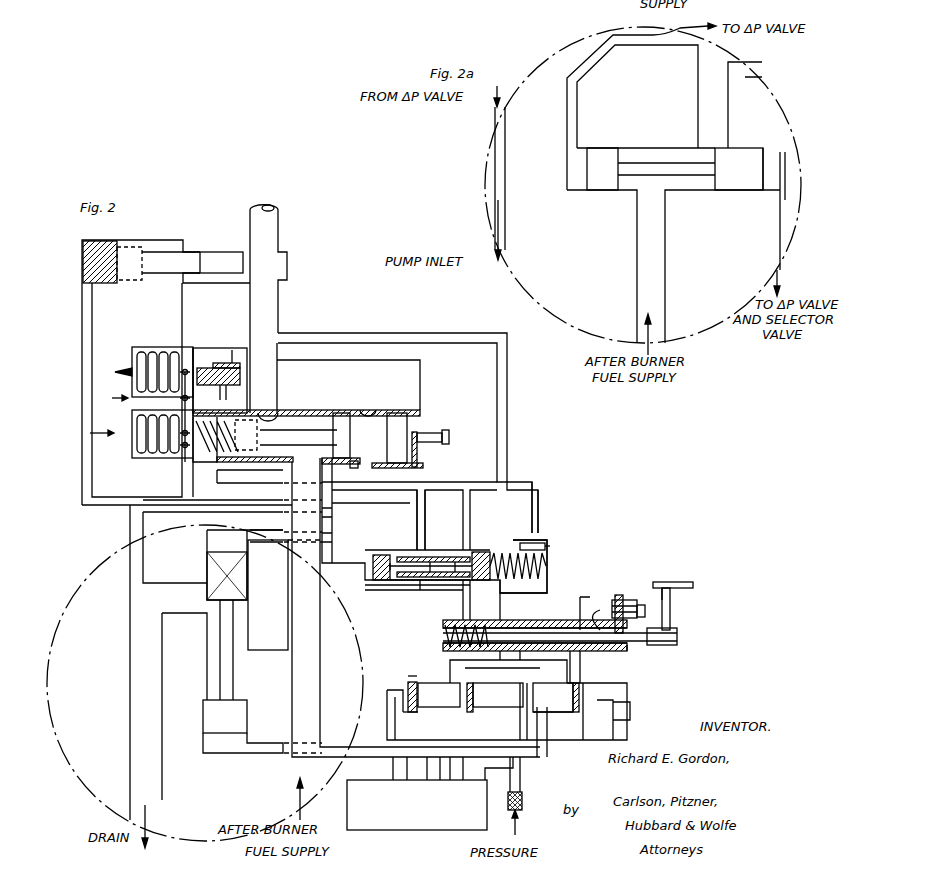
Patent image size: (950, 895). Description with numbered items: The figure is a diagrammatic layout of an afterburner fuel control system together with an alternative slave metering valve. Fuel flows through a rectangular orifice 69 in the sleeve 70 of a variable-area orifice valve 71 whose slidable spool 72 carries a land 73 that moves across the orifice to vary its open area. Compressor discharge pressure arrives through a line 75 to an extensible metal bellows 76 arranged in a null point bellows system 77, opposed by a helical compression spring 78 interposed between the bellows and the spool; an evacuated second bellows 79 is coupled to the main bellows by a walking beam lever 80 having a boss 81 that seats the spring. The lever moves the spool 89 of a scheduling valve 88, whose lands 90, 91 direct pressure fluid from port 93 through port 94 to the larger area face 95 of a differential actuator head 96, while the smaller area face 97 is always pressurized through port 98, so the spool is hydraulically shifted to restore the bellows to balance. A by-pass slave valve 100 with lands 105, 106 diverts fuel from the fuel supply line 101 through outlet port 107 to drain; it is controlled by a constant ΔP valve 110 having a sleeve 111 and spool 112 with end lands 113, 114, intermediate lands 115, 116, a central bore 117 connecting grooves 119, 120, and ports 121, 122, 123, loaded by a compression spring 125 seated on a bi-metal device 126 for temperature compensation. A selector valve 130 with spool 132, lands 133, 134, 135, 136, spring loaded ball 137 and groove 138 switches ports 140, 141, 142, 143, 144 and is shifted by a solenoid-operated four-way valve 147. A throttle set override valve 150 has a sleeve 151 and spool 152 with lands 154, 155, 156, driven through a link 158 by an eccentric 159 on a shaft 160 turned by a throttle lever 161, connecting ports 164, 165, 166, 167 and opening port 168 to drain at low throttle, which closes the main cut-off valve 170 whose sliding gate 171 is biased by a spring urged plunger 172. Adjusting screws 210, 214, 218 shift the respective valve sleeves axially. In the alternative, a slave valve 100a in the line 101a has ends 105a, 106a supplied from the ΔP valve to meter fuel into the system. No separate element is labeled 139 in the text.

In FIG. 2, the orifice 69 is at (287, 422).
In FIG. 2, the sleeve 70 is at (393, 410).
In FIG. 2, the variable-area orifice valve 71 is at (305, 430).
In FIG. 2, the spool 72 is at (318, 440).
In FIG. 2, the land 73 is at (252, 417).
In FIG. 2, the line 75 is at (115, 440).
In FIG. 2, the bellows 76 is at (155, 460).
In FIG. 2, the null point bellows system 77 is at (111, 391).
In FIG. 2, the helical compression spring 78 is at (238, 451).
In FIG. 2, the second bellows 79 is at (157, 350).
In FIG. 2, the walking beam lever 80 is at (184, 455).
In FIG. 2, the boss 81 is at (187, 463).
In FIG. 2, the scheduling valve 88 is at (250, 372).
In FIG. 2, the spool 89 is at (222, 363).
In FIG. 2, the land 90 is at (209, 395).
In FIG. 2, the land 91 is at (233, 363).
In FIG. 2, the port 93 is at (235, 395).
In FIG. 2, the port 94 is at (205, 365).
In FIG. 2, the larger area face 95 is at (425, 428).
In FIG. 2, the differential actuator head 96 is at (405, 443).
In FIG. 2, the smaller area face 97 is at (378, 422).
In FIG. 2, the port 98 is at (352, 470).
In FIG. 2, the by-pass slave valve 100 is at (225, 667).
In FIG. 2, the fuel supply line 101 is at (298, 629).
In FIG. 2, the land 105 is at (237, 577).
In FIG. 2, the land 106 is at (235, 720).
In FIG. 2, the outlet port 107 is at (184, 595).
In FIG. 2, the constant ΔP valve 110 is at (558, 563).
In FIG. 2, the sleeve 111 is at (362, 550).
In FIG. 2, the spool 112 is at (407, 555).
In FIG. 2, the end land 113 is at (372, 580).
In FIG. 2, the end land 114 is at (478, 552).
In FIG. 2, the intermediate land 115 is at (400, 585).
In FIG. 2, the intermediate land 116 is at (432, 555).
In FIG. 2, the central bore 117 is at (423, 578).
In FIG. 2, the groove 119 is at (388, 585).
In FIG. 2, the groove 120 is at (455, 555).
In FIG. 2, the port 121 is at (402, 553).
In FIG. 2, the port 122 is at (442, 590).
In FIG. 2, the port 123 is at (418, 512).
In FIG. 2, the compression spring 125 is at (517, 548).
In FIG. 2, the bi-metal device 126 is at (547, 566).
In FIG. 2, the selector valve 130 is at (617, 688).
In FIG. 2, the spool 132 is at (553, 721).
In FIG. 2, the land 133 is at (418, 705).
In FIG. 2, the land 134 is at (465, 705).
In FIG. 2, the land 135 is at (520, 698).
In FIG. 2, the land 136 is at (598, 702).
In FIG. 2, the spring loaded ball 137 is at (588, 706).
In FIG. 2, the groove 138 is at (605, 718).
In FIG. 2, the passage 139 is at (415, 690).
In FIG. 2, the port 140 is at (515, 714).
In FIG. 2, the port 141 is at (487, 680).
In FIG. 2, the port 142 is at (540, 720).
In FIG. 2, the port 143 is at (553, 697).
In FIG. 2, the port 144 is at (460, 690).
In FIG. 2, the solenoid-operated four-way valve 147 is at (432, 811).
In FIG. 2, the throttle set override valve 150 is at (628, 590).
In FIG. 2, the sleeve 151 is at (635, 628).
In FIG. 2, the spool 152 is at (535, 616).
In FIG. 2, the land 154 is at (535, 628).
In FIG. 2, the land 155 is at (535, 624).
In FIG. 2, the land 156 is at (608, 630).
In FIG. 2, the link 158 is at (679, 640).
In FIG. 2, the eccentric 159 is at (677, 633).
In FIG. 2, the shaft 160 is at (672, 600).
In FIG. 2, the throttle lever 161 is at (690, 582).
In FIG. 2, the port 164 is at (562, 672).
In FIG. 2, the port 165 is at (575, 620).
In FIG. 2, the port 166 is at (600, 610).
In FIG. 2, the port 167 is at (548, 655).
In FIG. 2, the port 168 is at (466, 614).
In FIG. 2, the main cut-off valve 170 is at (266, 258).
In FIG. 2, the sliding gate 171 is at (222, 258).
In FIG. 2, the spring urged plunger 172 is at (145, 253).
In FIG. 2, the adjusting screw 210 is at (547, 547).
In FIG. 2, the adjusting screw 214 is at (449, 440).
In FIG. 2, the adjusting screw 218 is at (643, 600).
In FIG. 2A, the slave valve 100a is at (658, 168).
In FIG. 2A, the line 101a is at (635, 262).
In FIG. 2A, the end 105a is at (600, 165).
In FIG. 2A, the end 106a is at (742, 165).